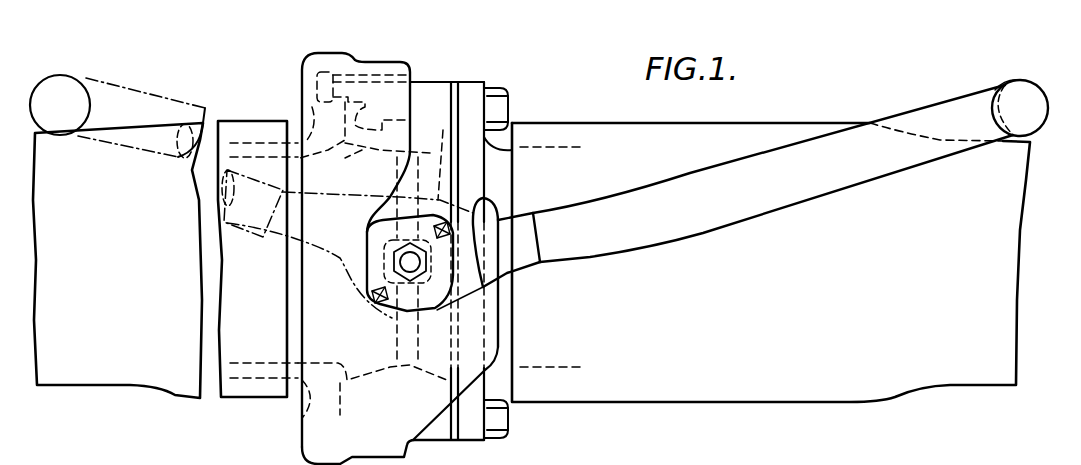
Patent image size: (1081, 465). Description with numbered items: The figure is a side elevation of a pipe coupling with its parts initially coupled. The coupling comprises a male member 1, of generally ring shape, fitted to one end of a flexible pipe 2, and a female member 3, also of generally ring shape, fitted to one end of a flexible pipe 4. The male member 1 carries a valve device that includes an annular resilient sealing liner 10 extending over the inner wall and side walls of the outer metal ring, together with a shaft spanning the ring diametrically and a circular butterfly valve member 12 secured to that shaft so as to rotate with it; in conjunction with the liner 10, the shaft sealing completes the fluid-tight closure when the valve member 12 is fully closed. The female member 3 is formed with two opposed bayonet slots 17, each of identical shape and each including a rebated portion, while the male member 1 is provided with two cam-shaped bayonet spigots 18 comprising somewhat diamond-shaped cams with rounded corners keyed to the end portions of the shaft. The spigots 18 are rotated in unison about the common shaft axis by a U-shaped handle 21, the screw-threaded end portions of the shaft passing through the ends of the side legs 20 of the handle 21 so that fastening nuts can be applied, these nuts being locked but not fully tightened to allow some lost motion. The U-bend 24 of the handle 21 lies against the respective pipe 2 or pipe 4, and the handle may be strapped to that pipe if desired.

The male member 1 is at (494, 80).
The flexible pipe 2 is at (557, 121).
The female member 3 is at (355, 50).
The flexible pipe 4 is at (242, 121).
The liner 10 is at (362, 150).
The butterfly valve member 12 is at (443, 130).
The bayonet slots 17 is at (466, 187).
The bayonet spigots 18 is at (370, 236).
The side legs 20 is at (707, 232).
The handle 21 is at (1008, 76).
The U-bend 24 is at (1040, 92).